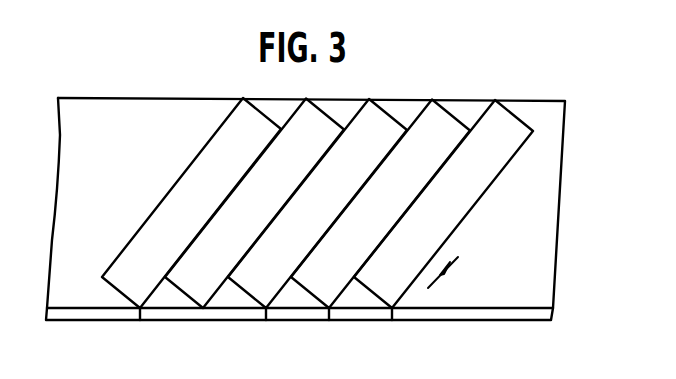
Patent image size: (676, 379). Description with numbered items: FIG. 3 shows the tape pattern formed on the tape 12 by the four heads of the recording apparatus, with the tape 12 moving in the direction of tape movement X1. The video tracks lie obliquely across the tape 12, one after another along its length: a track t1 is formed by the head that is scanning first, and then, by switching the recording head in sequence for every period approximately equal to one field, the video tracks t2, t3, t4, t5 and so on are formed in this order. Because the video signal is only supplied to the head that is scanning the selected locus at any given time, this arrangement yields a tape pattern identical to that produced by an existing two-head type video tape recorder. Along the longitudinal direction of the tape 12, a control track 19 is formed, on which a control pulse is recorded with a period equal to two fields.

The tape 12 is at (139, 104).
The control track 19 is at (100, 314).
The track t1 is at (515, 116).
The video track t2 is at (453, 116).
The video track t3 is at (389, 116).
The video track t4 is at (326, 116).
The video track t5 is at (269, 119).
The direction of tape movement X1 is at (390, 343).